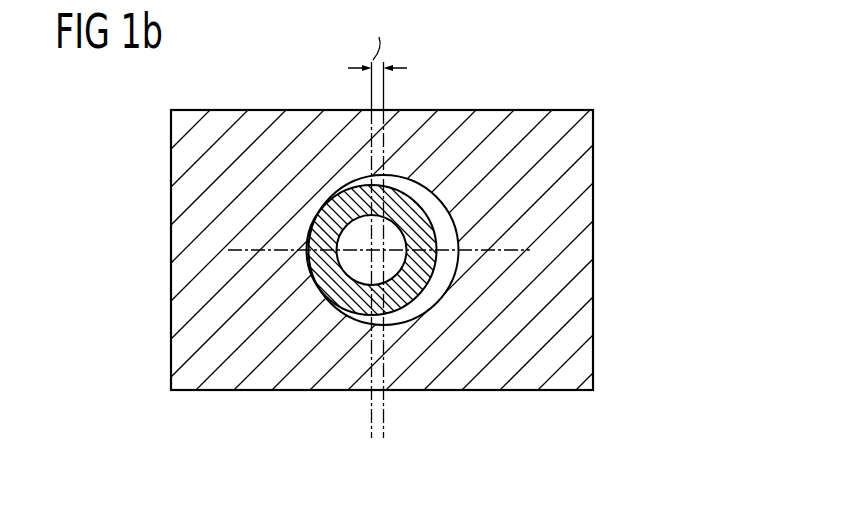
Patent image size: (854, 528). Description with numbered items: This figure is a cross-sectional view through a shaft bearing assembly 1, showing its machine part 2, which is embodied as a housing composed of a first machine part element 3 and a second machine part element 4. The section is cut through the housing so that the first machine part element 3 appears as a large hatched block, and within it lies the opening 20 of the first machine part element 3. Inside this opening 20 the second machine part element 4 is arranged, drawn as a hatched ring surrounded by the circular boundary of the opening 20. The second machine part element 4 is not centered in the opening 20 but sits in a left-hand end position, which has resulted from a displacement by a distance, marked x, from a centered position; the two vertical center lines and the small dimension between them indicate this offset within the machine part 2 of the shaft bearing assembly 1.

The shaft bearing assembly 1 is at (648, 133).
The machine part 2 is at (455, 104).
The first machine part element 3 is at (260, 377).
The second machine part element 4 is at (392, 300).
The opening 20 is at (427, 300).